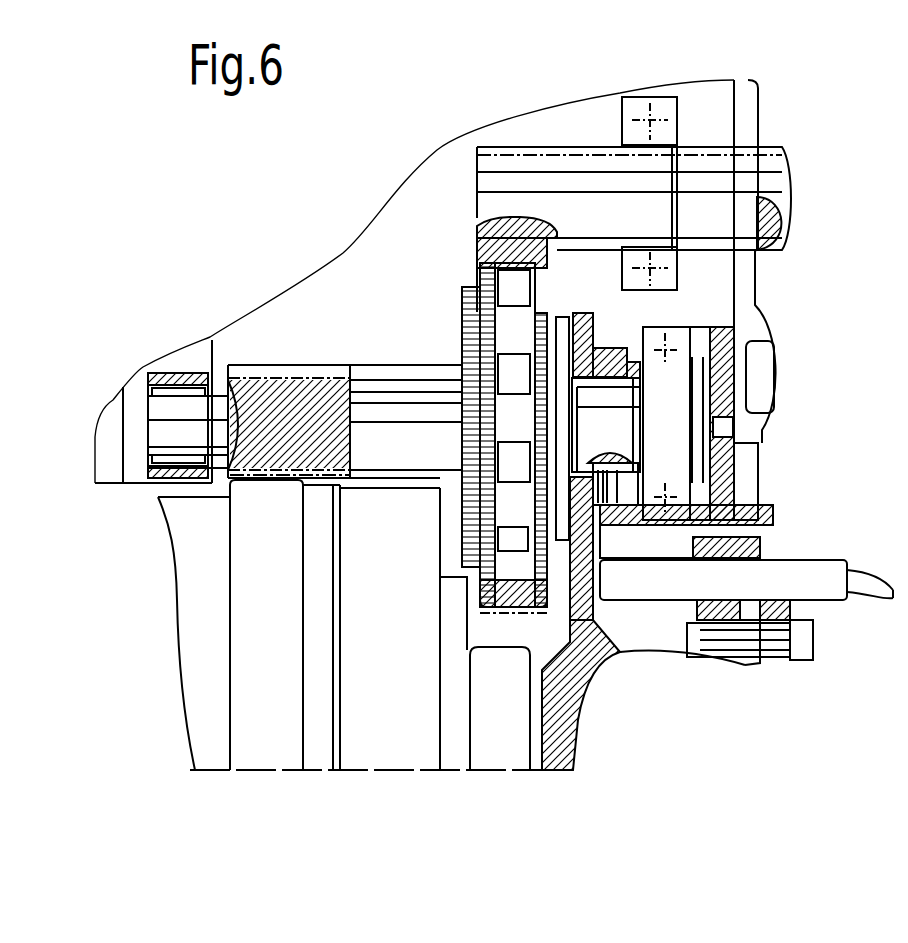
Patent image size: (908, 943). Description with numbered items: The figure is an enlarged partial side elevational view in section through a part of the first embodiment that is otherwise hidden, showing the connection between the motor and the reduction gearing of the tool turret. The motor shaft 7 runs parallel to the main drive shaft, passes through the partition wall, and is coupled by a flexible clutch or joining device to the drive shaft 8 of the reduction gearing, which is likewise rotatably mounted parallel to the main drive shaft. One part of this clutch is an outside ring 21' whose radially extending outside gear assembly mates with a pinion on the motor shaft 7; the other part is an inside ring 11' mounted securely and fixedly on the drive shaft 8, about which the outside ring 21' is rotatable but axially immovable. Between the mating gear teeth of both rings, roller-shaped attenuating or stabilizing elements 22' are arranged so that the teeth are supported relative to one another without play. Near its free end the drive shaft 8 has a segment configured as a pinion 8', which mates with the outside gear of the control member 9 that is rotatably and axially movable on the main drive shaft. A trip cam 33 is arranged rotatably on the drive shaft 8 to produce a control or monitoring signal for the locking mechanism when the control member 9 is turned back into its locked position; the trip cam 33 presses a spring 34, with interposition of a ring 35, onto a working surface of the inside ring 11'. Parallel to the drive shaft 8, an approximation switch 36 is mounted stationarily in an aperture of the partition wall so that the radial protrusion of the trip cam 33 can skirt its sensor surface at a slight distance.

The motor shaft 7 is at (745, 172).
The drive shaft 8 is at (554, 311).
The pinion 8' is at (249, 311).
The control member 9 is at (250, 685).
The inside ring 11' is at (578, 286).
The outside ring 21' is at (487, 192).
The attenuating or stabilizing elements 22' is at (456, 567).
The trip cam 33 is at (658, 657).
The spring 34 is at (663, 350).
The ring 35 is at (607, 353).
The approximation switch 36 is at (767, 582).